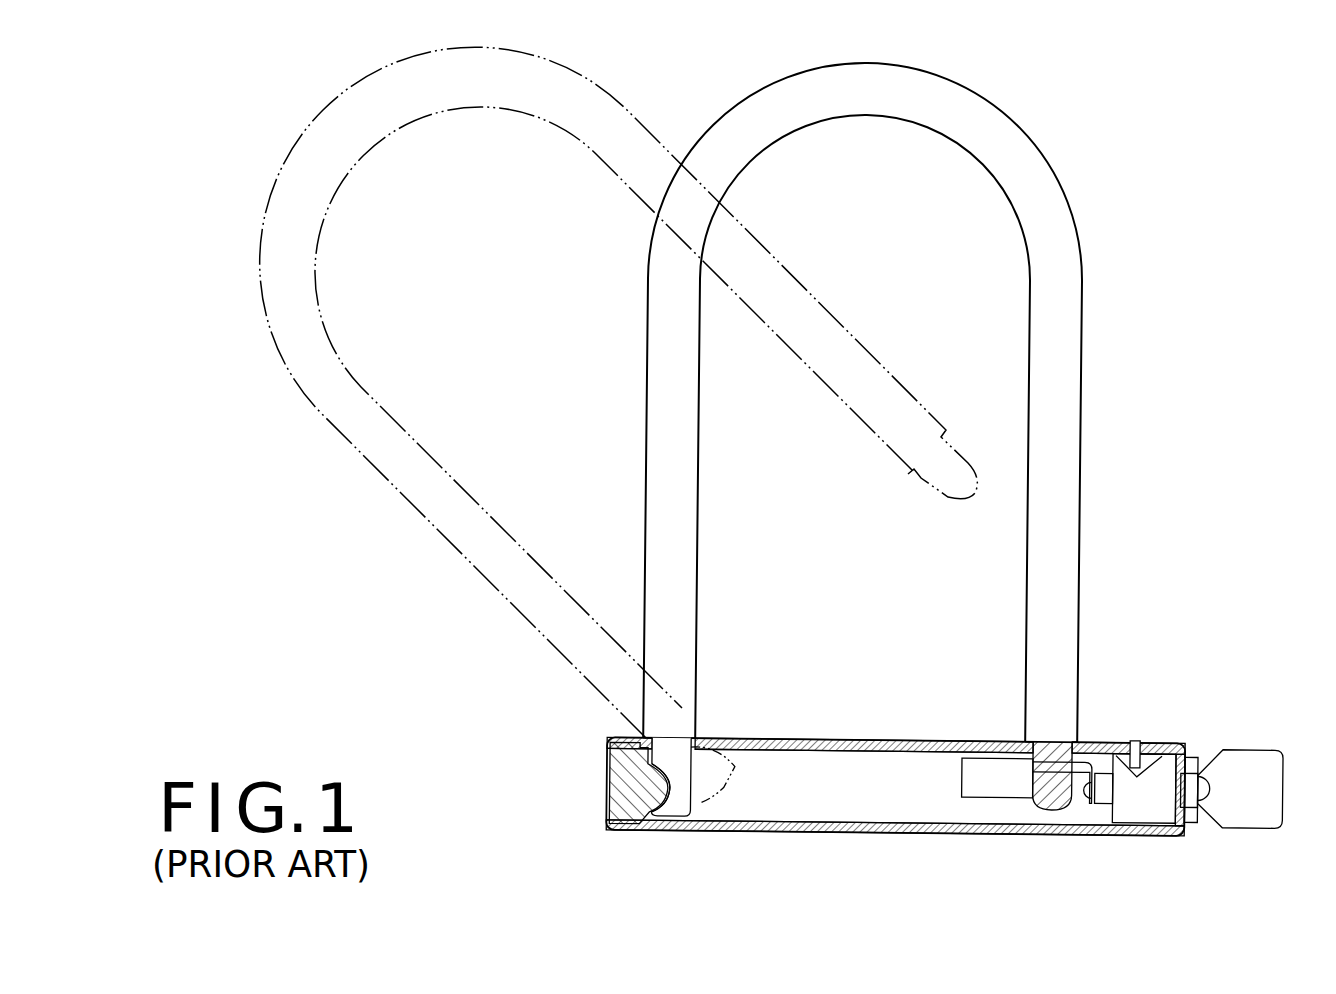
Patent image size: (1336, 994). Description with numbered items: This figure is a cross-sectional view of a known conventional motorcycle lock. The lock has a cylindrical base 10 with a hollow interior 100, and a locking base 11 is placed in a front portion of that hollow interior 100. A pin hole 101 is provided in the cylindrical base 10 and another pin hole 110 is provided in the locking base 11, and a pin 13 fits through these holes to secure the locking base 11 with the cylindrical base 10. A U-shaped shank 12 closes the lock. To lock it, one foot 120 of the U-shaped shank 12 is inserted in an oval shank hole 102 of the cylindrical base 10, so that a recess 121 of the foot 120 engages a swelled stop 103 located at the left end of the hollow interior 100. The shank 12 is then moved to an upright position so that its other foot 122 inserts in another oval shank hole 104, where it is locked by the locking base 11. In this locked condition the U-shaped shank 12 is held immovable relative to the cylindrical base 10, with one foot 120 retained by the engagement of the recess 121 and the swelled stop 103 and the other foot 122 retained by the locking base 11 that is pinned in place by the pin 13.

The cylindrical base 10 is at (813, 833).
The hollow interior 100 is at (920, 808).
The pin hole 101 is at (1129, 737).
The oval shank hole 102 is at (710, 740).
The swelled stop 103 is at (660, 783).
The oval shank hole 104 is at (1029, 739).
The locking base 11 is at (1146, 805).
The pin hole 110 is at (1161, 740).
The U-shaped shank 12 is at (1095, 355).
The foot 120 is at (705, 820).
The recess 121 is at (665, 818).
The foot 122 is at (1067, 808).
The pin 13 is at (1145, 739).